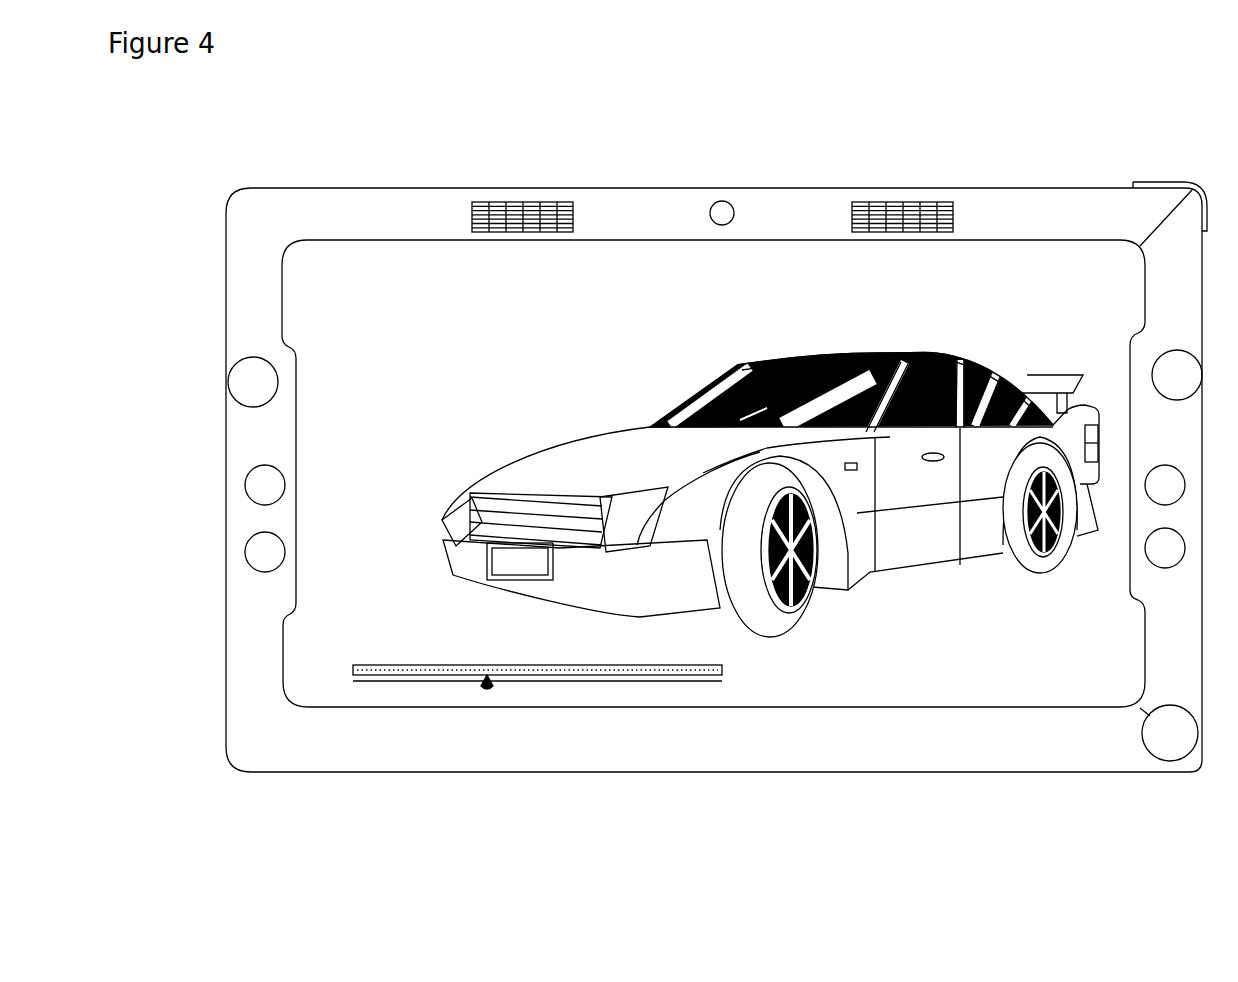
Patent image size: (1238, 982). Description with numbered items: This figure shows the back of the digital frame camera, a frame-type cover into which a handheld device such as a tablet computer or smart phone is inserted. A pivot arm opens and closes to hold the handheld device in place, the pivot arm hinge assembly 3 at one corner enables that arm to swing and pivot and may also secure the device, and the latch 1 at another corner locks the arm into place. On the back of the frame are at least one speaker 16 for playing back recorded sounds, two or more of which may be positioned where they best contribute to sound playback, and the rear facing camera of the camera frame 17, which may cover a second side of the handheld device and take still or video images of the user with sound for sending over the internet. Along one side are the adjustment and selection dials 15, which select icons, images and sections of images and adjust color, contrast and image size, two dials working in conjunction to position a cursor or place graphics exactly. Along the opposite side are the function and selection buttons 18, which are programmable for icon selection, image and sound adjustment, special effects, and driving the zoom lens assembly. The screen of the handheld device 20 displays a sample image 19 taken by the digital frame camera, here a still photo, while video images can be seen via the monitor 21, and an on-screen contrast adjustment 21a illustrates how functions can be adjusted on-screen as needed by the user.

The latch 1 is at (1177, 170).
The pivot arm hinge assembly 3 is at (1167, 742).
The adjustment and selection dial 15 is at (1183, 362).
The speaker 16 is at (520, 180).
The back of camera frame 17 is at (722, 205).
The function and selection buttons 18 is at (233, 484).
The sample image 19 is at (495, 460).
The screen of the handheld device 20 is at (713, 473).
The monitor 21 is at (515, 304).
The on screen contrast adjustment 21a is at (568, 665).